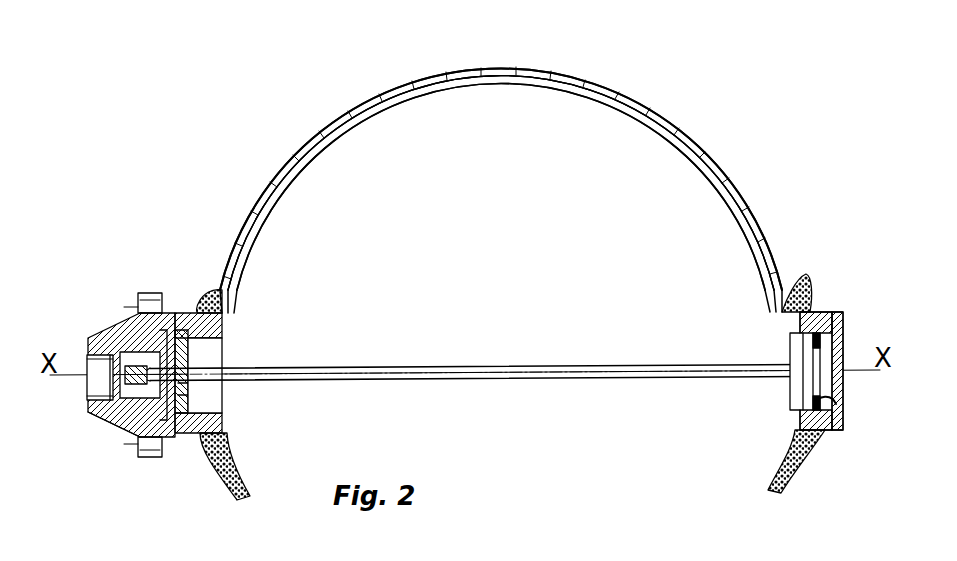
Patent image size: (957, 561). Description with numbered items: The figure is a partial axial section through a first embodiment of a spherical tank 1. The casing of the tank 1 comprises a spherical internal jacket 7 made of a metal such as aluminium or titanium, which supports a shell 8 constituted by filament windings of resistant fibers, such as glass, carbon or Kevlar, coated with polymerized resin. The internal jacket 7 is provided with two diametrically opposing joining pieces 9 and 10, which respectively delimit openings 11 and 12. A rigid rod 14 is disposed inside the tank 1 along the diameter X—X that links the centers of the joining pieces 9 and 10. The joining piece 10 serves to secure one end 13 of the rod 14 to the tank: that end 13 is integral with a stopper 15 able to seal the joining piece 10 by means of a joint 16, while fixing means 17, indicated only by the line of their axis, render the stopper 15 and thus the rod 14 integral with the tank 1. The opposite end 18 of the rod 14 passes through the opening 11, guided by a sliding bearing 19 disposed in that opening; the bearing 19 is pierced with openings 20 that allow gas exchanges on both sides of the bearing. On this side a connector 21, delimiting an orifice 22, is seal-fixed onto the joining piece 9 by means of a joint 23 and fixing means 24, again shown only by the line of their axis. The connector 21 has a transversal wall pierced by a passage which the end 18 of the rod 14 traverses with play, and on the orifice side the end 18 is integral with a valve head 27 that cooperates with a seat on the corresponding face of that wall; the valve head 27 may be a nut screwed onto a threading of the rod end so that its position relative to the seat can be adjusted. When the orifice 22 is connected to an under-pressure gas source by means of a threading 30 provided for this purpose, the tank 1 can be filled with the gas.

The tank 1 is at (625, 80).
The internal jacket 7 is at (348, 128).
The shell 8 is at (699, 143).
The joining piece 9 is at (229, 319).
The joining piece 10 is at (819, 311).
The opening 11 is at (222, 356).
The opening 12 is at (790, 343).
The end of the rod 13 is at (800, 378).
The rigid rod 14 is at (474, 367).
The stopper 15 is at (838, 346).
The joint 16 is at (843, 405).
The fixing means 17 is at (847, 319).
The end of the rod 18 is at (145, 456).
The sliding bearing 19 is at (190, 388).
The openings 20 is at (178, 440).
The connector 21 is at (125, 335).
The orifice 22 is at (92, 388).
The joint 23 is at (165, 306).
The fixing means 24 is at (137, 305).
The valve head 27 is at (130, 406).
The threading 30 is at (90, 355).